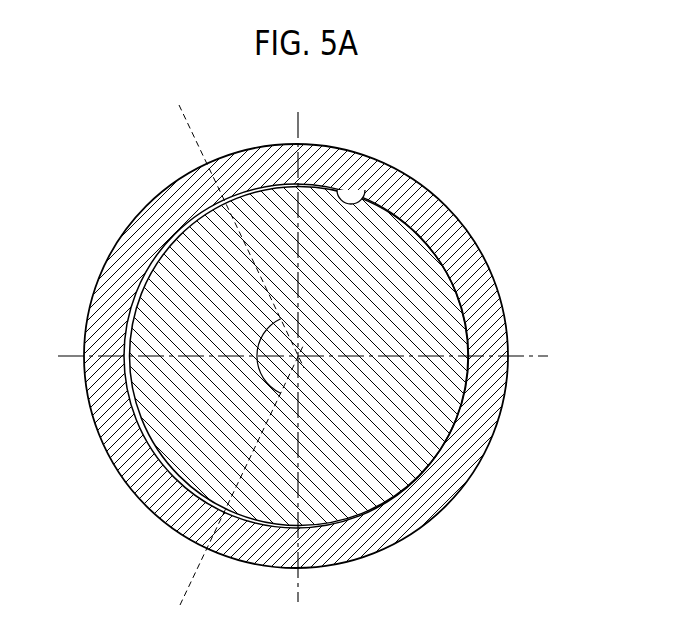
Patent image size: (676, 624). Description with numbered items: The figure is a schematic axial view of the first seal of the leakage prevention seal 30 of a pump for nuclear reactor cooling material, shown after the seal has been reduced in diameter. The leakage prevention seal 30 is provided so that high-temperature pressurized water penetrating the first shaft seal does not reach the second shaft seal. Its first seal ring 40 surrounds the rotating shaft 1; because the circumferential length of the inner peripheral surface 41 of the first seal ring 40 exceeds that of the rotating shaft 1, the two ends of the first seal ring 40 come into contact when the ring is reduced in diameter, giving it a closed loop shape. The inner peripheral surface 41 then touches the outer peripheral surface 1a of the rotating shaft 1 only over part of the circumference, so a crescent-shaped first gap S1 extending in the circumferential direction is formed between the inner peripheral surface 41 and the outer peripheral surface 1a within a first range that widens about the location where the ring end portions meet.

The leakage prevention seal 30 is at (444, 166).
The first seal ring 40 is at (142, 228).
The first gap S1 is at (124, 318).
The rotating shaft 1 is at (413, 470).
The outer peripheral surface of the rotating shaft 1a is at (468, 313).
The inner peripheral surface of the first seal ring 41 is at (367, 198).